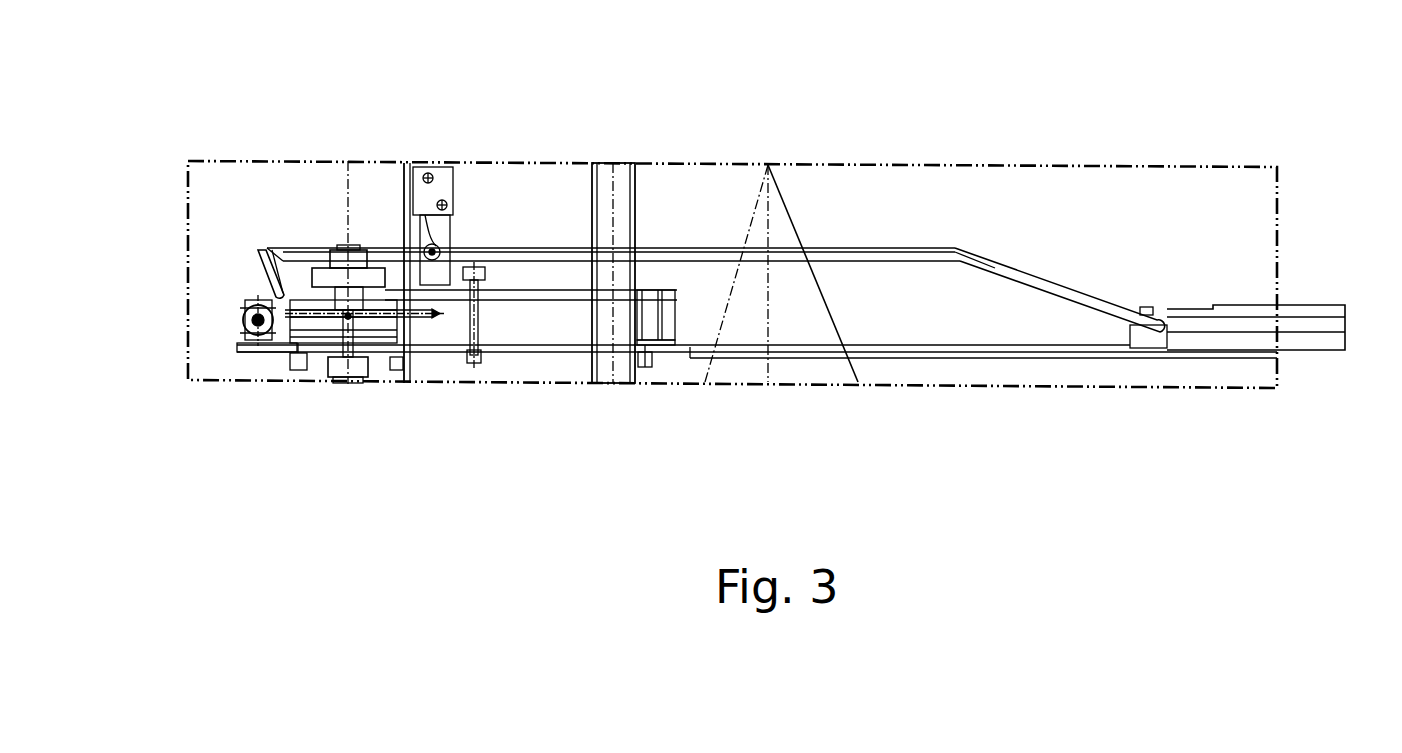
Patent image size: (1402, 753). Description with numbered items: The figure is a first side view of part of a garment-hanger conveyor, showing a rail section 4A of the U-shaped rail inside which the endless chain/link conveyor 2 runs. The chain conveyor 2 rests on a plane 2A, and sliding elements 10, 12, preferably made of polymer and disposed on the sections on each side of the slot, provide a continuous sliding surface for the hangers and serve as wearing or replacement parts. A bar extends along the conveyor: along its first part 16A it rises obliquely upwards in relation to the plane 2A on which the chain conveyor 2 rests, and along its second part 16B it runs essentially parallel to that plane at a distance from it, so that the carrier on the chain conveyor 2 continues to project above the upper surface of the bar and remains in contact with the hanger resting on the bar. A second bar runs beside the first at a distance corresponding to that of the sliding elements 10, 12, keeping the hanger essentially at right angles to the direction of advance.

The chain/link conveyor 2 is at (240, 320).
The plane 2A is at (340, 238).
The sliding element 10 is at (240, 302).
The sliding element 12 is at (1140, 305).
The first part of the bar 16A is at (992, 268).
The second part of the bar 16B is at (523, 255).
The section 4A is at (1310, 330).